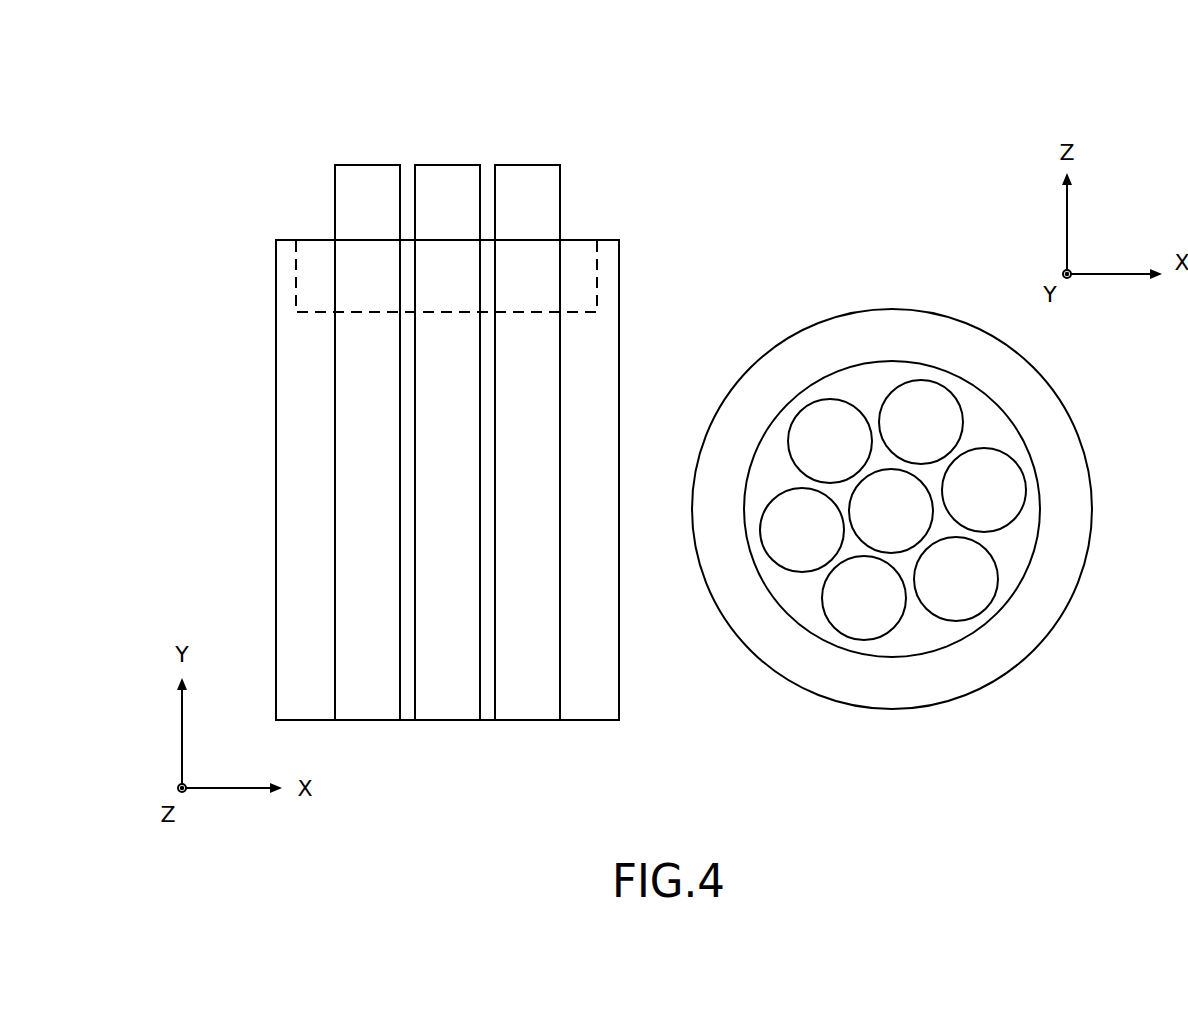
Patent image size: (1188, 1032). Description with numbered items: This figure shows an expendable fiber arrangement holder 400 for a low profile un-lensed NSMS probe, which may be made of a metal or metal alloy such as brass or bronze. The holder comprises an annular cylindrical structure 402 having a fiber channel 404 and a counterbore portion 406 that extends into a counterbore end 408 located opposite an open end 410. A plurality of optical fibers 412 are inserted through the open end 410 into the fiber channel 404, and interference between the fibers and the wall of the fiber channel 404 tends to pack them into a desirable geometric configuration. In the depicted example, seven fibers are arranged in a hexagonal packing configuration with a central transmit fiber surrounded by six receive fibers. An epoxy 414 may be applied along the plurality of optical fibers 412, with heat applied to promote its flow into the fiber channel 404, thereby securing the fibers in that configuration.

The expendable fiber arrangement holder 400 is at (644, 134).
The annular cylindrical structure 402 is at (620, 364).
The fiber channel 404 is at (1030, 570).
The counterbore portion 406 is at (297, 271).
The counterbore end 408 is at (598, 239).
The open end 410 is at (595, 721).
The plurality of optical fibers 412 is at (367, 178).
The epoxy 414 is at (981, 423).